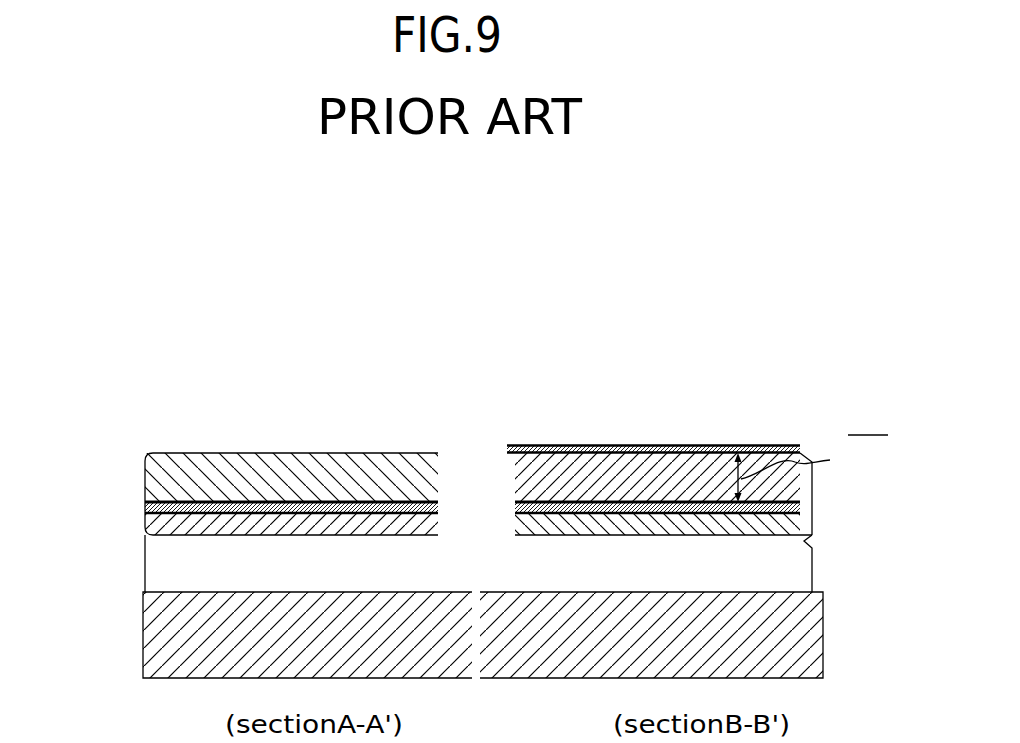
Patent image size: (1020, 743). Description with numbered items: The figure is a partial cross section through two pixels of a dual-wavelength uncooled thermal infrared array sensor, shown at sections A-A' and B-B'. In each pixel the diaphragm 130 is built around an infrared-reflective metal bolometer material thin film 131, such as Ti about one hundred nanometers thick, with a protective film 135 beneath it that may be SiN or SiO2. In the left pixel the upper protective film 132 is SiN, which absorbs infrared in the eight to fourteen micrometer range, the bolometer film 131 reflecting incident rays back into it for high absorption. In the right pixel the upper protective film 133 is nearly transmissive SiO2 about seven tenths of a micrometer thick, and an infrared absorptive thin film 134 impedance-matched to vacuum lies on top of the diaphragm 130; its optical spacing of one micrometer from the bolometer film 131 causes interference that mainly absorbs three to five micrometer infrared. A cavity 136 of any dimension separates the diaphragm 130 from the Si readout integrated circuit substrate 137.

The diaphragm 130 is at (486, 409).
The metal bolometer material thin film 131 is at (247, 502).
The protective film 132 is at (213, 473).
The protective film 133 is at (597, 473).
The infrared absorptive thin film 134 is at (557, 445).
The protective film 135 is at (290, 513).
The cavity 136 is at (145, 566).
The Si readout integrated circuit substrate 137 is at (823, 636).